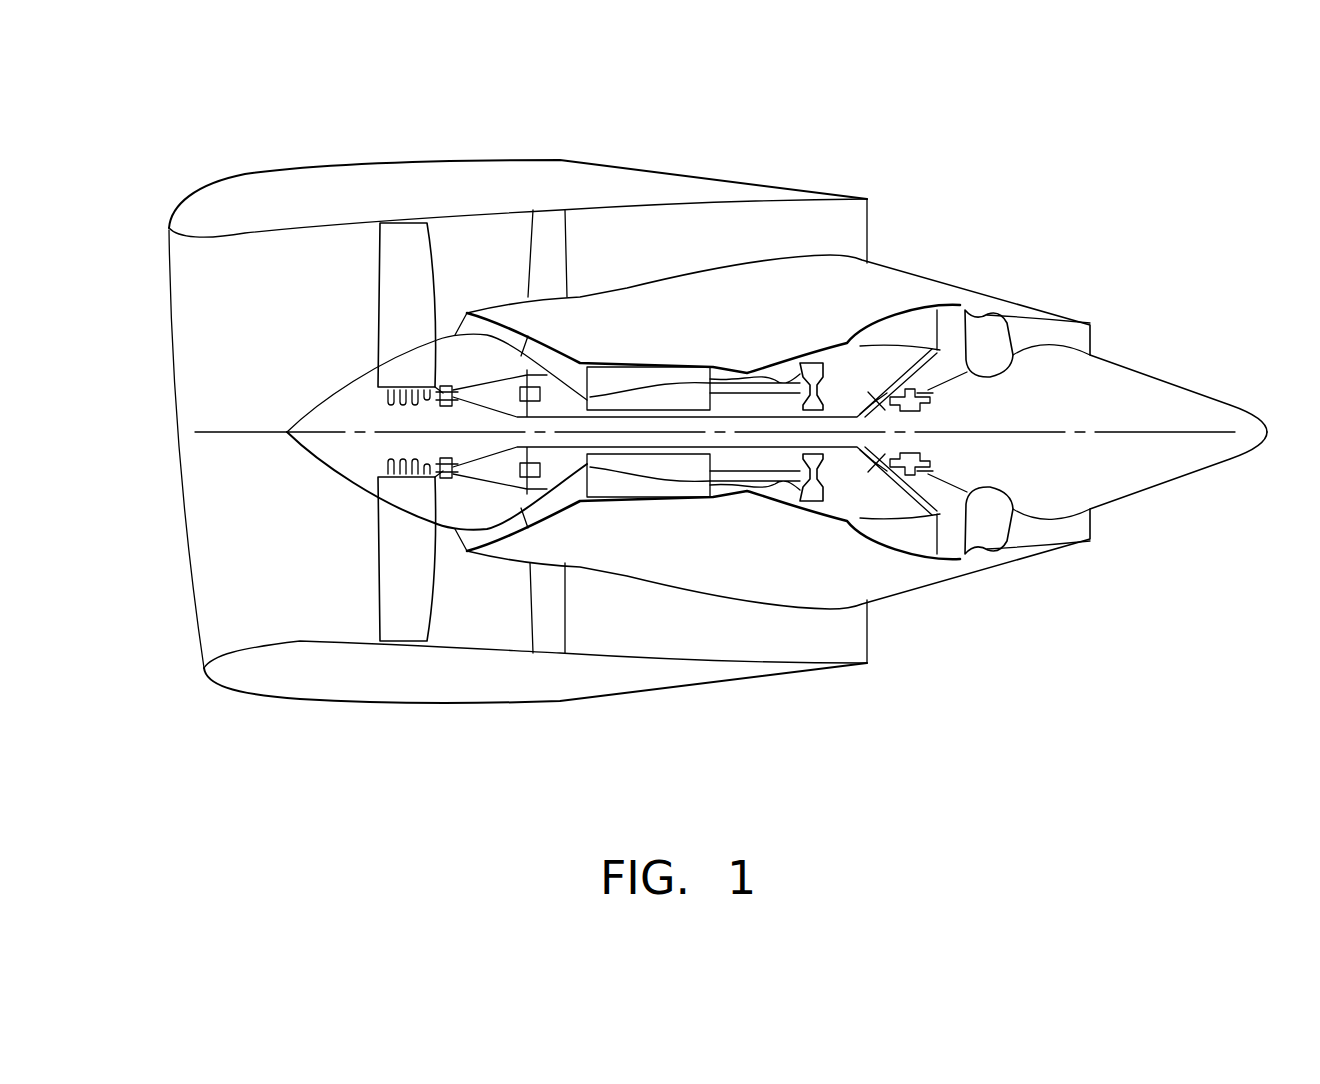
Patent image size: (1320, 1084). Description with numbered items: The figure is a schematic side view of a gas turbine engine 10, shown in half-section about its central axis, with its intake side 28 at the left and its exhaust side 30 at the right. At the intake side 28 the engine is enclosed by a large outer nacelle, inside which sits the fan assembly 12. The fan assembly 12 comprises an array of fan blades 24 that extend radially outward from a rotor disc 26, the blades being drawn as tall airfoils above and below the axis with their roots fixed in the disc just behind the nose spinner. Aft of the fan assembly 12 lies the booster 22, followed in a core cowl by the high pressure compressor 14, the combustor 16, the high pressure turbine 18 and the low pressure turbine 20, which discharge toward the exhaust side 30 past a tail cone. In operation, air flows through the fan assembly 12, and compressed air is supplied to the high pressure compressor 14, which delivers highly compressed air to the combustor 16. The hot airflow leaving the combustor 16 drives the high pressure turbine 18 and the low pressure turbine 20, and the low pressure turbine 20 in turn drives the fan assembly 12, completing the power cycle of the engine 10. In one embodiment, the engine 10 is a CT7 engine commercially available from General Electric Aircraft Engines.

The gas turbine engine 10 is at (840, 170).
The fan assembly 12 is at (382, 590).
The high pressure compressor 14 is at (607, 377).
The combustor 16 is at (773, 373).
The high pressure turbine 18 is at (830, 522).
The low pressure turbine 20 is at (900, 320).
The booster 22 is at (505, 333).
The fan blades 24 is at (400, 275).
The rotor disc 26 is at (397, 505).
The intake side 28 is at (190, 268).
The exhaust side 30 is at (905, 232).